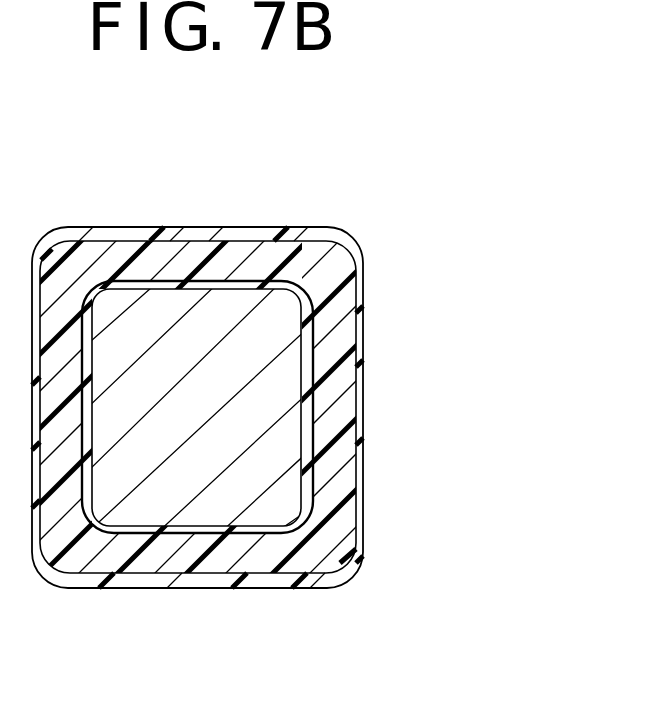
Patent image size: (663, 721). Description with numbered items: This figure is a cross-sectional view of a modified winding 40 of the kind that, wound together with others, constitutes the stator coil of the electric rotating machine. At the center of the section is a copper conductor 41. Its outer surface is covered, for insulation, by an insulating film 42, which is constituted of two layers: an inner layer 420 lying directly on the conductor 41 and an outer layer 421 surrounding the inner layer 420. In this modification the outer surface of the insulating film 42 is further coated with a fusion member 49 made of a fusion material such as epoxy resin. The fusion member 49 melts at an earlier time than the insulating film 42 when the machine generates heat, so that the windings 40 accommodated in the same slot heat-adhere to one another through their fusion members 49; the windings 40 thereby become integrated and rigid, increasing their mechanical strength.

The winding 40 is at (193, 196).
The copper conductor 41 is at (277, 432).
The insulating film 42 is at (490, 277).
The inner layer 420 is at (313, 358).
The outer layer 421 is at (343, 292).
The fusion member 49 is at (355, 402).